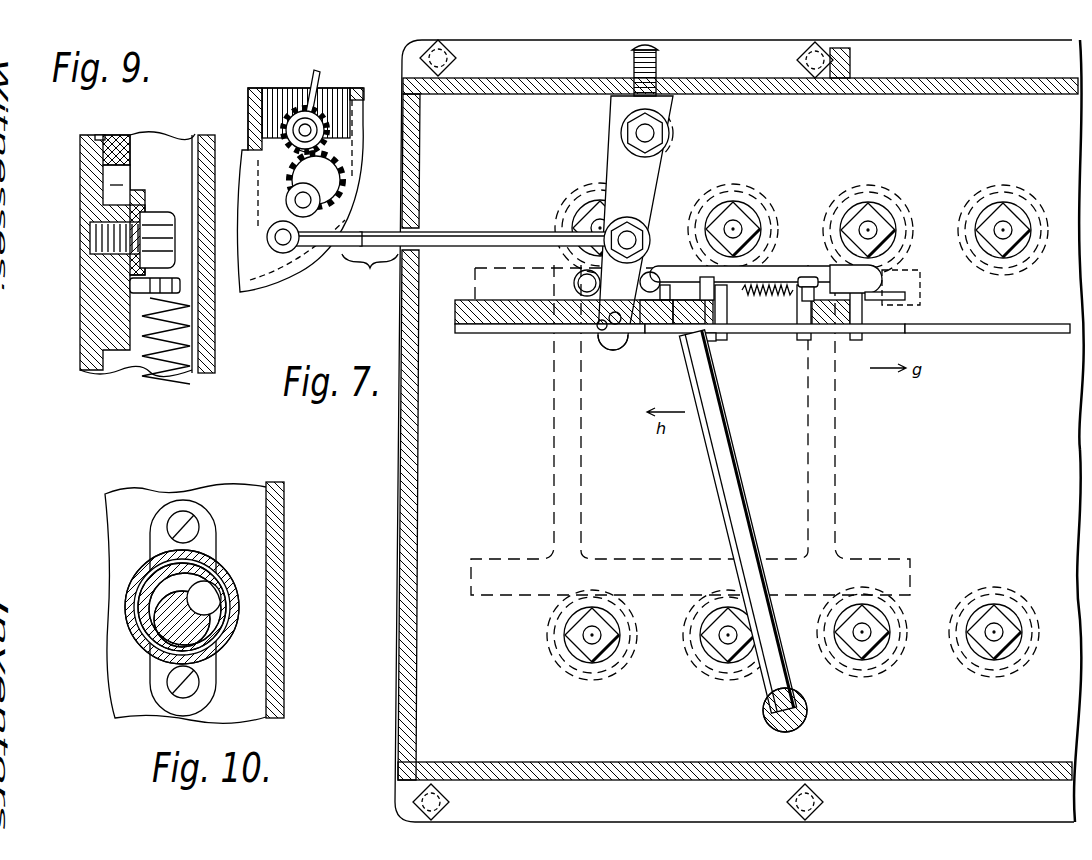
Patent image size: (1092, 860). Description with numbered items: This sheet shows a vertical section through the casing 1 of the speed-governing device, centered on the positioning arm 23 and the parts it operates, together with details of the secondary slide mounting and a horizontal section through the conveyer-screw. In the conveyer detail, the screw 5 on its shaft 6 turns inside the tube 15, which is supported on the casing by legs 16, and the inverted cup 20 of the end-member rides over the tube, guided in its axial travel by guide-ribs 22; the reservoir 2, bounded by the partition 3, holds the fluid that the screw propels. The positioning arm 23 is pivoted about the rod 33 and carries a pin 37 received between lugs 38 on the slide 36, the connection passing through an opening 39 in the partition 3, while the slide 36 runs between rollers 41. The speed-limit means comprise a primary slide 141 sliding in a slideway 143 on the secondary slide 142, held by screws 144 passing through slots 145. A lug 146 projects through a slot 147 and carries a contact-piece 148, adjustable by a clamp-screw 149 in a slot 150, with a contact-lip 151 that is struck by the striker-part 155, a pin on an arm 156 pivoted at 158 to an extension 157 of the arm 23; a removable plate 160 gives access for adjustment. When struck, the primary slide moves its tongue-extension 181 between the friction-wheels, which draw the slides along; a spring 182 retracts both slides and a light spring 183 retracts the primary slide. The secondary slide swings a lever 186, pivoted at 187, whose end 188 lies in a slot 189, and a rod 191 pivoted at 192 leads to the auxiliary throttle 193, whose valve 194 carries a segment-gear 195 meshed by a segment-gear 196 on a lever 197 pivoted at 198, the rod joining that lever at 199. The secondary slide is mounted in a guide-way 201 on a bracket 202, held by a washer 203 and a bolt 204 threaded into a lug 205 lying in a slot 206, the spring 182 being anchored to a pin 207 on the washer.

In FIG. 7, the casing 1 is at (396, 412).
In FIG. 9, the casing 1 is at (210, 338).
In FIG. 10, the casing 1 is at (282, 574).
In FIG. 7, the reservoir 2 is at (1020, 718).
In FIG. 10, the reservoir 2 is at (240, 506).
In FIG. 7, the partition 3 is at (1040, 511).
In FIG. 10, the screw 5 is at (200, 592).
In FIG. 10, the shaft 6 is at (165, 636).
In FIG. 10, the tube 15 is at (224, 612).
In FIG. 10, the legs 16 is at (202, 548).
In FIG. 10, the inverted cup 20 is at (222, 596).
In FIG. 10, the guide-ribs 22 is at (150, 572).
In FIG. 7, the positioning arm 23 is at (714, 470).
In FIG. 7, the rod 33 is at (808, 712).
In FIG. 7, the slide 36 is at (838, 444).
In FIG. 7, the pin 37 is at (665, 330).
In FIG. 7, the lugs 38 is at (708, 205).
In FIG. 7, the opening 39 is at (880, 290).
In FIG. 7, the rollers 41 is at (575, 200).
In FIG. 7, the primary slide 141 is at (708, 341).
In FIG. 7, the secondary slide 142 is at (508, 323).
In FIG. 9, the secondary slide 142 is at (92, 292).
In FIG. 7, the slideway 143 is at (560, 333).
In FIG. 7, the screws 144 is at (722, 334).
In FIG. 7, the slots 145 is at (690, 327).
In FIG. 7, the lug 146 is at (726, 330).
In FIG. 7, the slot 147 is at (855, 336).
In FIG. 7, the contact-piece 148 is at (804, 333).
In FIG. 7, the clamp-screw 149 is at (812, 282).
In FIG. 7, the slot 150 is at (905, 298).
In FIG. 7, the contact-lip 151 is at (765, 285).
In FIG. 7, the striker-part 155 is at (620, 340).
In FIG. 7, the arm 156 is at (664, 285).
In FIG. 7, the extension 157 is at (655, 272).
In FIG. 7, the pivot 158 is at (580, 287).
In FIG. 7, the removable plate 160 is at (852, 62).
In FIG. 7, the tongue-extension 181 is at (1000, 334).
In FIG. 9, the spring 182 is at (162, 382).
In FIG. 7, the light spring 183 is at (712, 277).
In FIG. 7, the lever 186 is at (628, 172).
In FIG. 7, the pivot 187 is at (652, 136).
In FIG. 7, the end 188 is at (610, 350).
In FIG. 7, the slot 189 is at (598, 328).
In FIG. 7, the connection 191 is at (430, 246).
In FIG. 7, the pivot 192 is at (622, 242).
In FIG. 7, the throttle 193 is at (243, 112).
In FIG. 7, the valve 194 is at (312, 78).
In FIG. 7, the segment-gear 195 is at (328, 136).
In FIG. 7, the segment-gear 196 is at (340, 171).
In FIG. 7, the lever 197 is at (350, 232).
In FIG. 7, the pivot 198 is at (294, 200).
In FIG. 7, the connection point 199 is at (285, 246).
In FIG. 9, the guide-way 201 is at (97, 135).
In FIG. 9, the bracket 202 is at (128, 152).
In FIG. 9, the washer 203 is at (137, 222).
In FIG. 9, the bolt 204 is at (160, 232).
In FIG. 9, the lug 205 is at (108, 216).
In FIG. 9, the slot 206 is at (115, 172).
In FIG. 9, the pin 207 is at (185, 288).